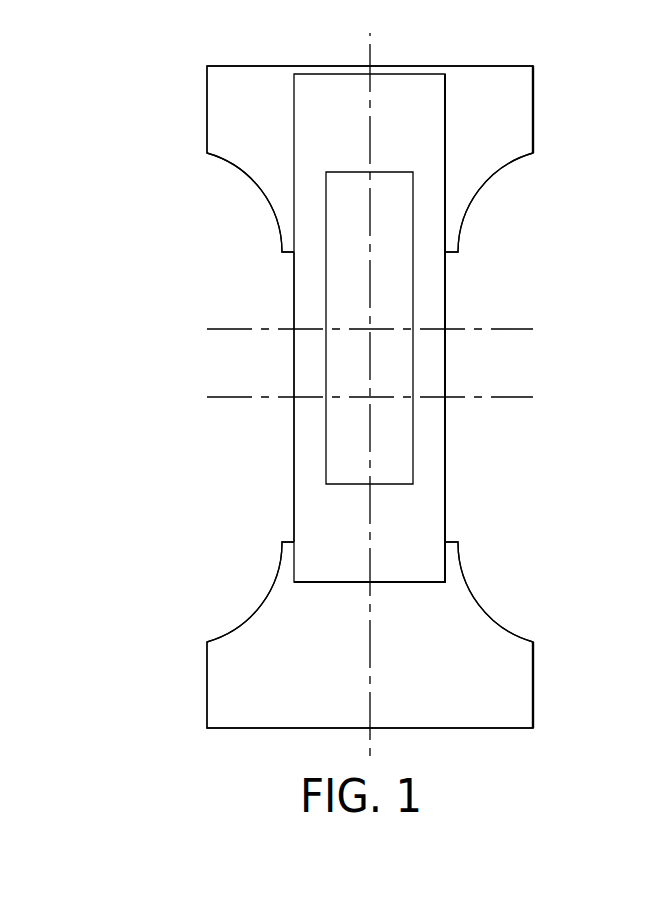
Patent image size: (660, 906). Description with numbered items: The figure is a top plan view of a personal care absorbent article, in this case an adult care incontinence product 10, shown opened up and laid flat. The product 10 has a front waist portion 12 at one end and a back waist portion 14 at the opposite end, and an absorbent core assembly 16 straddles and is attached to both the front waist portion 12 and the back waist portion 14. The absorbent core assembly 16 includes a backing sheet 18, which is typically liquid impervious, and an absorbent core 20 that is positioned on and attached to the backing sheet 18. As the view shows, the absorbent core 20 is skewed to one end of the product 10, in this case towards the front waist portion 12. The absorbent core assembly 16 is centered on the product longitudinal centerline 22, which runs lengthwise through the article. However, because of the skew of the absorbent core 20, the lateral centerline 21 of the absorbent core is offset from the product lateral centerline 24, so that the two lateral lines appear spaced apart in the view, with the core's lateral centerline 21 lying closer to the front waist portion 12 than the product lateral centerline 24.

The adult care incontinence product 10 is at (145, 170).
The front waist portion 12 is at (514, 107).
The back waist portion 14 is at (489, 699).
The absorbent core assembly 16 is at (455, 427).
The backing sheet 18 is at (416, 539).
The absorbent core 20 is at (408, 267).
The lateral centerline of the absorbent core 21 is at (508, 329).
The product longitudinal centerline 22 is at (370, 48).
The product lateral centerline 24 is at (508, 397).